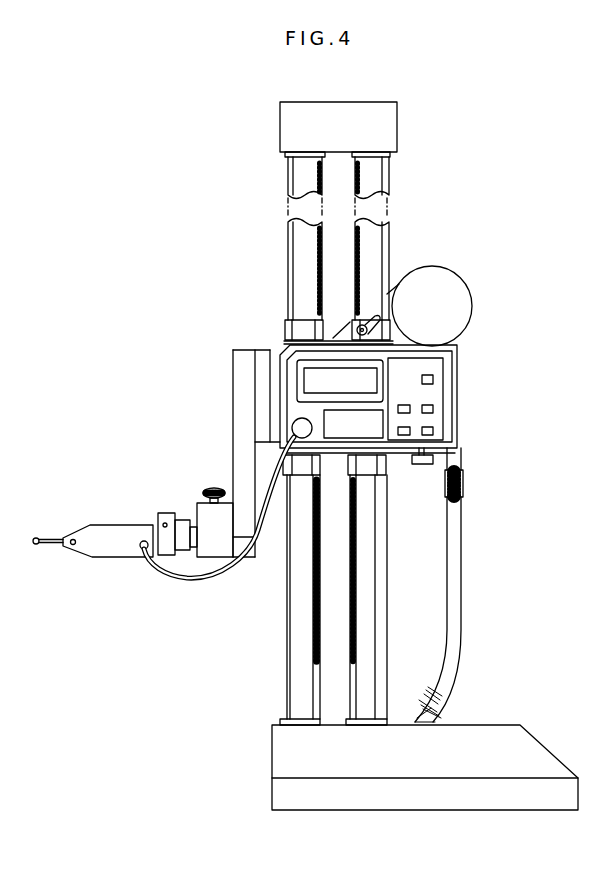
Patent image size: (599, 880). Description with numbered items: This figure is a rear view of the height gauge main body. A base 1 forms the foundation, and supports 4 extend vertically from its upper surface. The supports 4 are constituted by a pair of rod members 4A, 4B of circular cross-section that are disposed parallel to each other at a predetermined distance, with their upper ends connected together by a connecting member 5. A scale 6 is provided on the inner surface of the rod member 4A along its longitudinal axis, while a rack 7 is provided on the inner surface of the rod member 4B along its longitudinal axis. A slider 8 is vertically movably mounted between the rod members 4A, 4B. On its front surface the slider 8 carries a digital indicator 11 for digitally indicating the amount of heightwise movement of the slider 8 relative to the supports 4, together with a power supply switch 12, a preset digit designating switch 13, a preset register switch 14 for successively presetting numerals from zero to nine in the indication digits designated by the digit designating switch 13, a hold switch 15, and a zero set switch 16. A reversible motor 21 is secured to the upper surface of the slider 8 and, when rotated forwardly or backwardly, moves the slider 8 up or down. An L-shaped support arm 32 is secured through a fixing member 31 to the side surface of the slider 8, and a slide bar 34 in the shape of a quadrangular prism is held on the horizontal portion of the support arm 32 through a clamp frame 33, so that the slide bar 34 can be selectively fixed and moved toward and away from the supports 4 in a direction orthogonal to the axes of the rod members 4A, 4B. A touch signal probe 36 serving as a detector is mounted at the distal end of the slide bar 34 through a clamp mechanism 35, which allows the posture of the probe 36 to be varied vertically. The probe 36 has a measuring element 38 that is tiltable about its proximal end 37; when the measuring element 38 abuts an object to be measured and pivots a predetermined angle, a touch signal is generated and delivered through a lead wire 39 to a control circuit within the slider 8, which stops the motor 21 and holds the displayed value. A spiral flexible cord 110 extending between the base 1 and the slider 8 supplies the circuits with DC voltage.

The base 1 is at (365, 800).
The supports 4 is at (297, 248).
The rod member 4A is at (296, 233).
The rod member 4B is at (368, 270).
The connecting member 5 is at (287, 117).
The scale 6 is at (320, 190).
The rack 7 is at (353, 180).
The slider 8 is at (376, 403).
The digital indicator 11 is at (300, 378).
The power supply switch 12 is at (436, 380).
The preset digit designating switch 13 is at (403, 405).
The preset register switch 14 is at (436, 409).
The hold switch 15 is at (403, 438).
The zero set switch 16 is at (437, 431).
The reversible motor 21 is at (462, 297).
The fixing member 31 is at (262, 377).
The support arm 32 is at (240, 414).
The clamp frame 33 is at (199, 475).
The slide bar 34 is at (237, 551).
The clamp mechanism 35 is at (167, 513).
The touch signal probe 36 is at (113, 552).
The proximal end 37 is at (73, 548).
The measuring element 38 is at (43, 546).
The lead wire 39 is at (168, 572).
The spiral flexible cord 110 is at (438, 702).